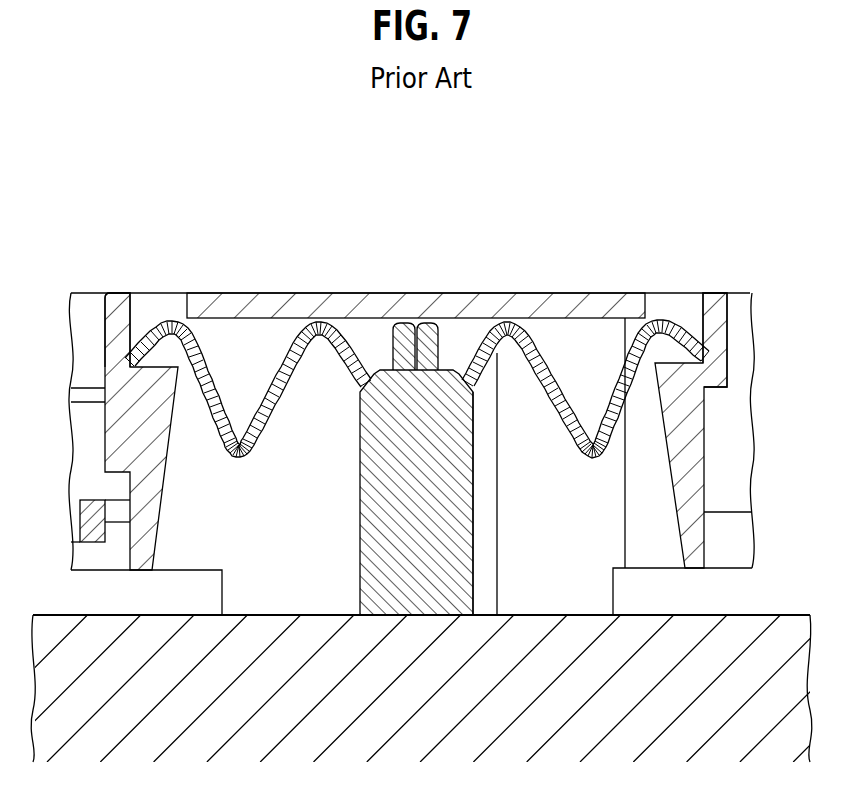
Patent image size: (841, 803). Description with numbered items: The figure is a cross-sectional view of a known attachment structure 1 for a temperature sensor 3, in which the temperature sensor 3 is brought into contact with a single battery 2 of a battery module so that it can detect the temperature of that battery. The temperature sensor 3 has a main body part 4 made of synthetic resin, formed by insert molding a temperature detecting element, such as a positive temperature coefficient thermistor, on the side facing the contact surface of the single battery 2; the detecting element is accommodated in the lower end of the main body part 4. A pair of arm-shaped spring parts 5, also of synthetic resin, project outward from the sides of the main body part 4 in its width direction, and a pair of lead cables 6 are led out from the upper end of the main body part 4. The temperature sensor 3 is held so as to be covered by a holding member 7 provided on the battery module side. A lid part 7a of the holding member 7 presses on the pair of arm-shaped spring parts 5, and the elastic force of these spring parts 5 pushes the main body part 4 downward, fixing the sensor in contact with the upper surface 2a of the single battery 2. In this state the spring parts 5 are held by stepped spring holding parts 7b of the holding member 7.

The attachment structure 1 is at (420, 208).
The single battery 2 is at (780, 613).
The upper surface 2a is at (292, 613).
The temperature sensor 3 is at (358, 513).
The main body part 4 is at (474, 538).
The arm-shaped spring parts 5 is at (281, 372).
The lead cables 6 is at (399, 322).
The holding member 7 is at (116, 291).
The lid part 7a is at (412, 318).
The stepped spring holding parts 7b is at (171, 338).